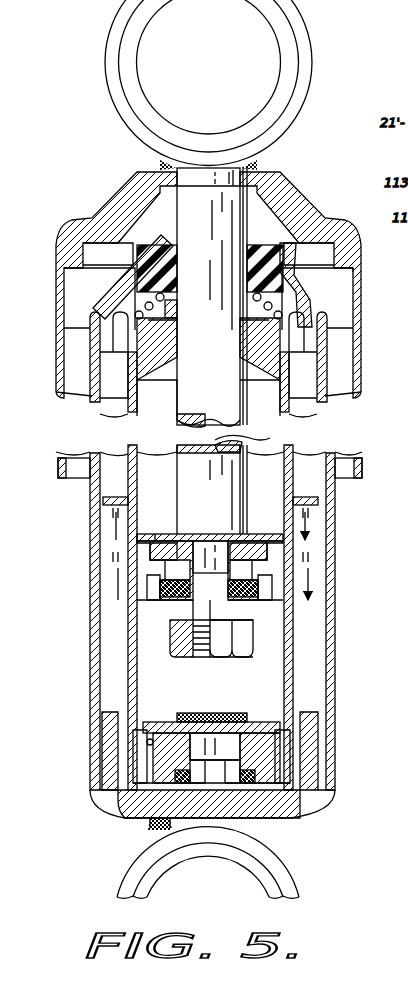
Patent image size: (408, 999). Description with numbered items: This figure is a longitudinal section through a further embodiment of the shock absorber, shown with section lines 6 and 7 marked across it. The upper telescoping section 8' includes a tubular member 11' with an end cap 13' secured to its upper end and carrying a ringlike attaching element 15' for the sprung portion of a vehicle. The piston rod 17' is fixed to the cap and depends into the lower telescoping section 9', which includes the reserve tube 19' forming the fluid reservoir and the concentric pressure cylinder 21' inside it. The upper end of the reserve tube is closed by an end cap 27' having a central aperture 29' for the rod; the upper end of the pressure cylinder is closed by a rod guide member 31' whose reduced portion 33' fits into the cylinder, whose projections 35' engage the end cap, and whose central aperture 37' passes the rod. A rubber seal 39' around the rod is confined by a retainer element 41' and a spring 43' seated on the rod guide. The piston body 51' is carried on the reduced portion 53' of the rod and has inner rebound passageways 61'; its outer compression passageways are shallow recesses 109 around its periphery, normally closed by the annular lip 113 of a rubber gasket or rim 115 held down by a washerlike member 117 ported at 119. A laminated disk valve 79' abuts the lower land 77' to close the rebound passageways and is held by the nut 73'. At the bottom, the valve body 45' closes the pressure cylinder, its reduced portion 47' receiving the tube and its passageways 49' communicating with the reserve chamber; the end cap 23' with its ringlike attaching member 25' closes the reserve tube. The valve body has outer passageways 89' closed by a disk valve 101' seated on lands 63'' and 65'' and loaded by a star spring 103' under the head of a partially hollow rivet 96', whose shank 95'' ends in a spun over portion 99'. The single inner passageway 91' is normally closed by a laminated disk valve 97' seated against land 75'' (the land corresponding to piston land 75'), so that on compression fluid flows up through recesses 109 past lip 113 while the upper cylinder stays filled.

The ringlike attaching element 15' is at (229, 83).
The end cap 13' is at (208, 279).
The tubular member 11' is at (229, 345).
The telescoping section 8' is at (374, 264).
The central aperture 37' is at (208, 297).
The central aperture 29' is at (259, 296).
The end cap 27' is at (311, 264).
The rubber seal 39' is at (133, 261).
The retainer element 41' is at (172, 268).
The spring 43' is at (172, 302).
The projections 35' is at (187, 357).
The rod guide member 31' is at (208, 363).
The reduced portion 33' is at (189, 385).
The piston rod 17' is at (247, 432).
The tubular member 19' is at (212, 635).
The second tubular member 21' is at (248, 617).
The telescoping section 9' is at (349, 607).
The section line 6 is at (150, 521).
The section line 7 is at (150, 556).
The notches or recesses 109 is at (268, 534).
The annular lip 113 is at (148, 534).
The rubber gasket or rim 115 is at (160, 534).
The ports 119 is at (175, 540).
The washerlike member 117 is at (260, 532).
The reduced portion 53' is at (210, 570).
The piston body 51' is at (262, 582).
The restricted passageways 61' is at (187, 594).
The land 75' is at (190, 616).
The land 77' is at (170, 628).
The laminated disk valve 79' is at (235, 628).
The nut 73' is at (241, 645).
The land 65'' is at (210, 701).
The land 63'' is at (211, 734).
The star spring 103' is at (217, 726).
The disk valve 101' is at (212, 702).
The partially hollow rivet 96' is at (215, 721).
The rivet shank 95'' is at (215, 740).
The inner passageway 91' is at (245, 740).
The outer passageways 89' is at (99, 747).
The reduced portion 47' is at (185, 751).
The passageways 49' is at (193, 794).
The end cap 23' is at (240, 792).
The valve body 45' is at (331, 752).
The land 75'' is at (250, 793).
The laminated disk valve 97' is at (134, 825).
The spun over portion 99' is at (140, 833).
The ringlike attaching member 25' is at (240, 863).